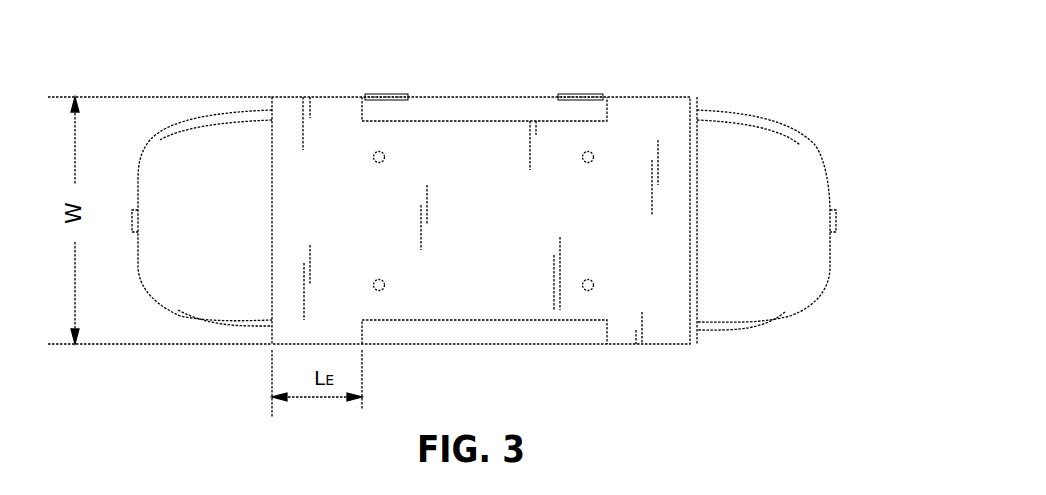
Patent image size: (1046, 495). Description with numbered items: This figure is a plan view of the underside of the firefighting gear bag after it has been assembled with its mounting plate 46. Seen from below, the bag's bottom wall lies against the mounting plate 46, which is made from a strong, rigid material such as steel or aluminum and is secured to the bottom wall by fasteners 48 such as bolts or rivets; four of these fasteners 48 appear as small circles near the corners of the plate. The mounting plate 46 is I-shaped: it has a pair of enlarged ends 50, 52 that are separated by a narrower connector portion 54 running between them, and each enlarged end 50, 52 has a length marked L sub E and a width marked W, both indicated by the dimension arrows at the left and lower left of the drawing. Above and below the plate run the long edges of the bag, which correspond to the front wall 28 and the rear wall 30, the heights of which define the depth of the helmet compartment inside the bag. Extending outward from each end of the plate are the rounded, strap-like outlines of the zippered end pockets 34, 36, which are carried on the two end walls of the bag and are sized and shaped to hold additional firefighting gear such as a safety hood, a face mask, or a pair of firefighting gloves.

The front wall 28 is at (483, 344).
The rear wall 30 is at (478, 97).
The end pocket 34 is at (162, 280).
The end pocket 36 is at (805, 165).
The mounting plate 46 is at (335, 130).
The fasteners 48 is at (380, 152).
The enlarged end 50 is at (285, 155).
The enlarged end 52 is at (674, 122).
The connector portion 54 is at (506, 132).